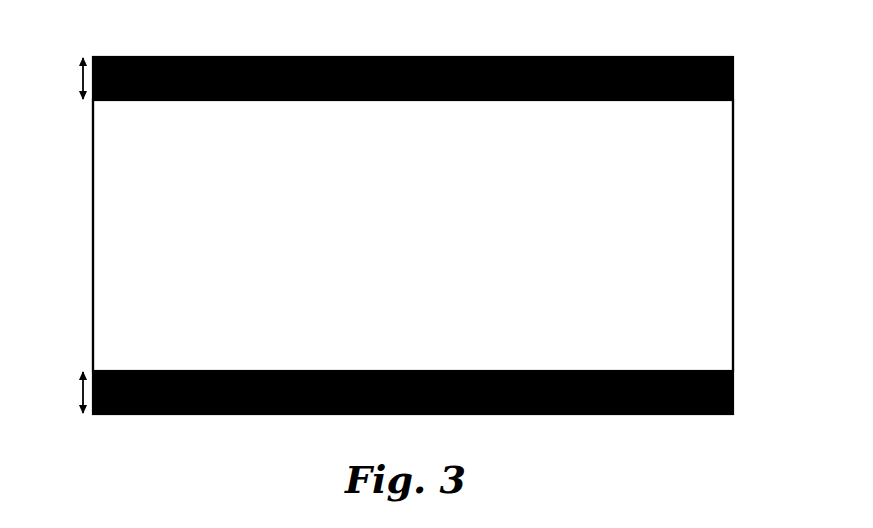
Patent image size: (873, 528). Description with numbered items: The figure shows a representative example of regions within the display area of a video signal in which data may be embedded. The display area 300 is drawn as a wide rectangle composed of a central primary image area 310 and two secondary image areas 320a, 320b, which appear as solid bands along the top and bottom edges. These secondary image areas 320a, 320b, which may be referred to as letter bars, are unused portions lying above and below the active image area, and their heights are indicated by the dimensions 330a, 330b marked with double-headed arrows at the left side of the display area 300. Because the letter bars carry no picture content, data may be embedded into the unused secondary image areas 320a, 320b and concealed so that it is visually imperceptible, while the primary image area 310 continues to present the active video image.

The display area 300 is at (118, 44).
The primary image area 310 is at (711, 257).
The secondary image area 320a is at (734, 82).
The secondary image area 320b is at (734, 397).
The dimension 330a is at (76, 78).
The dimension 330b is at (80, 391).